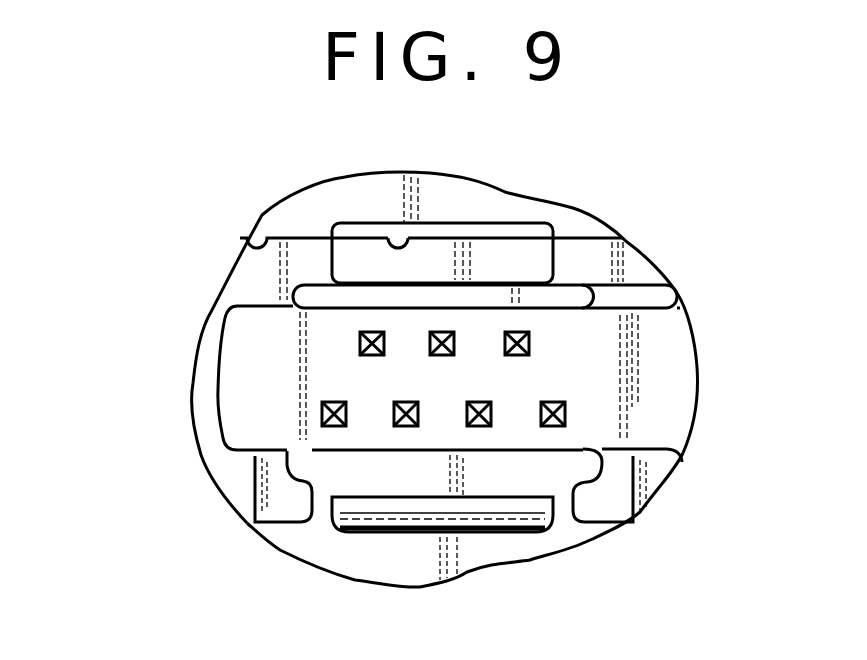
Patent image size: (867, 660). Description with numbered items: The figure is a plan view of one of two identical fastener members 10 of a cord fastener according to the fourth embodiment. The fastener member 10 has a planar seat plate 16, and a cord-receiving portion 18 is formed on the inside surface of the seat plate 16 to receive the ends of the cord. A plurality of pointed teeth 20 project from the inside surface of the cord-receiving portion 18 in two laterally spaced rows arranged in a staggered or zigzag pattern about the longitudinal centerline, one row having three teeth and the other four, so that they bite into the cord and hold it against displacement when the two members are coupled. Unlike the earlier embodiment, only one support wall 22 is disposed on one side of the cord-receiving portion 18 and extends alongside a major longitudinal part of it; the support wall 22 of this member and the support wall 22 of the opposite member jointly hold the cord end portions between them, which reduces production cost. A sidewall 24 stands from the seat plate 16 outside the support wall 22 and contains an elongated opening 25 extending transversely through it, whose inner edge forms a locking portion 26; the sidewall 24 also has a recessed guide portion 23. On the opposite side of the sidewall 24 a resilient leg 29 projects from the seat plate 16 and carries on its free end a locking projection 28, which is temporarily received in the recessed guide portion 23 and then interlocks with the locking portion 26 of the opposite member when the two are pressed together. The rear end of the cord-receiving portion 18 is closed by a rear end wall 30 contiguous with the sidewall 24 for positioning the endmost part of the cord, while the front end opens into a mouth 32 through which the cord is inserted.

The fastener member 10 is at (630, 225).
The seat plate 16 is at (538, 551).
The cord-receiving portion 18 is at (292, 385).
The pointed teeth 20 is at (360, 344).
The support wall 22 is at (583, 295).
The recessed guide portion 23 is at (464, 223).
The sidewall 24 is at (247, 246).
The opening 25 is at (553, 222).
The locking portion 26 is at (391, 236).
The locking projection 28 is at (467, 537).
The resilient leg 29 is at (350, 510).
The rear end wall 30 is at (213, 437).
The mouth 32 is at (673, 370).